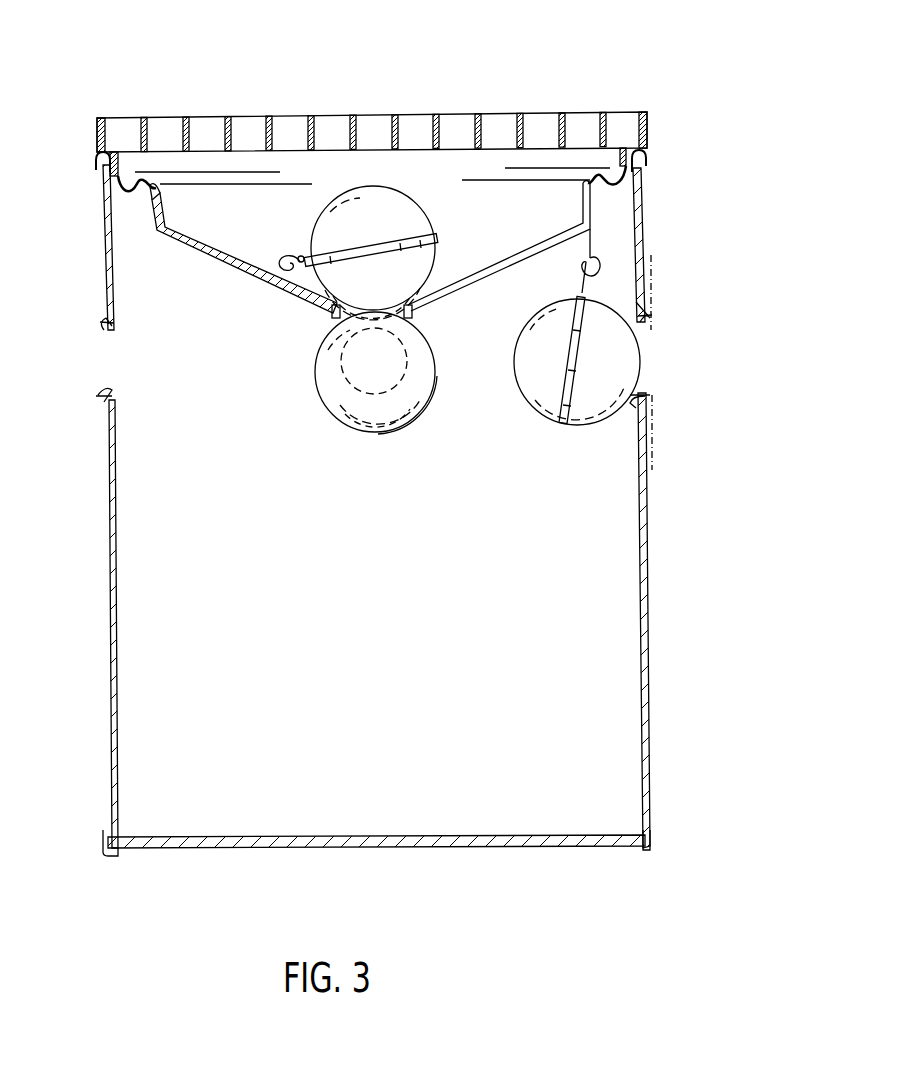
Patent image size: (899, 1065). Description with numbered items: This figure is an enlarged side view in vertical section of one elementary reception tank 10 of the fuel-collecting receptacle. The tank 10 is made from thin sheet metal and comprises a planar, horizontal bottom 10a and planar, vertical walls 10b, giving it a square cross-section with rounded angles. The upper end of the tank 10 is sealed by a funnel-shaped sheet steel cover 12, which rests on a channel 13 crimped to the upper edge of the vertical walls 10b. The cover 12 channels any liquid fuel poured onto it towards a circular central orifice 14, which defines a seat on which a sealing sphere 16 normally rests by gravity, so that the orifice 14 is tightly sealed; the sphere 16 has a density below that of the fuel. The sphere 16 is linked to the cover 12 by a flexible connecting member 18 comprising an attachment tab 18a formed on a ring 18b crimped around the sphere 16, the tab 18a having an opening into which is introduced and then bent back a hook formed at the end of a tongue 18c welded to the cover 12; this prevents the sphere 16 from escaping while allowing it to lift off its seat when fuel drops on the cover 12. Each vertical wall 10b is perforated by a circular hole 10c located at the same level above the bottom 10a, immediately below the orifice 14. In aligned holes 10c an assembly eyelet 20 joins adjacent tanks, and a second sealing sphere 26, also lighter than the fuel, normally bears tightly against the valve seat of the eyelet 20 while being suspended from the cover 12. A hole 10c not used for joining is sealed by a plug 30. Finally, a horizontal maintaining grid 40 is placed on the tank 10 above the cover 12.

The elementary reception tank 10 is at (378, 528).
The bottom 10a is at (588, 843).
The vertical wall 10b is at (106, 600).
The circular hole 10c is at (107, 341).
The cover 12 is at (194, 257).
The channel 13 is at (645, 213).
The central orifice 14 is at (352, 317).
The sealing sphere 16 is at (440, 254).
The flexible connecting member 18 is at (420, 52).
The attachment tab 18a is at (303, 256).
The ring 18b is at (386, 236).
The tongue 18c is at (284, 264).
The assembly eyelet 20 is at (631, 405).
The sealing sphere 26 is at (515, 392).
The plug 30 is at (97, 381).
The horizontal maintaining grid 40 is at (562, 124).